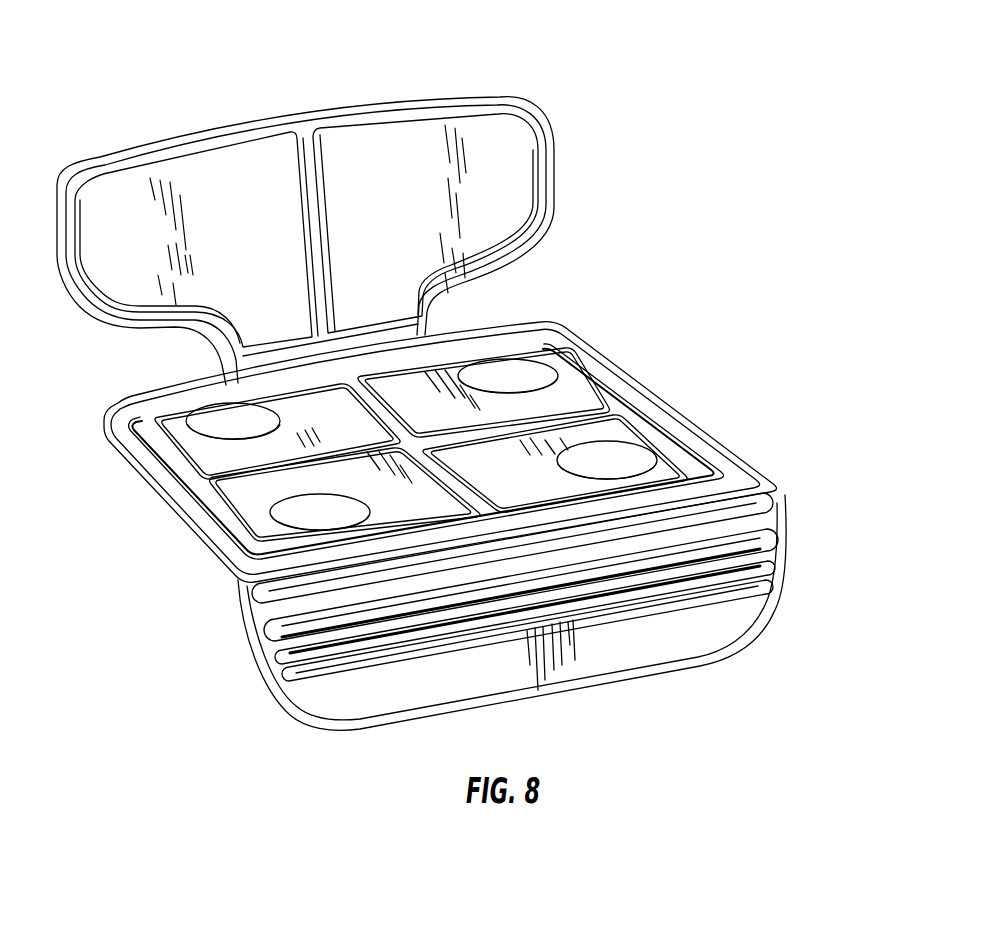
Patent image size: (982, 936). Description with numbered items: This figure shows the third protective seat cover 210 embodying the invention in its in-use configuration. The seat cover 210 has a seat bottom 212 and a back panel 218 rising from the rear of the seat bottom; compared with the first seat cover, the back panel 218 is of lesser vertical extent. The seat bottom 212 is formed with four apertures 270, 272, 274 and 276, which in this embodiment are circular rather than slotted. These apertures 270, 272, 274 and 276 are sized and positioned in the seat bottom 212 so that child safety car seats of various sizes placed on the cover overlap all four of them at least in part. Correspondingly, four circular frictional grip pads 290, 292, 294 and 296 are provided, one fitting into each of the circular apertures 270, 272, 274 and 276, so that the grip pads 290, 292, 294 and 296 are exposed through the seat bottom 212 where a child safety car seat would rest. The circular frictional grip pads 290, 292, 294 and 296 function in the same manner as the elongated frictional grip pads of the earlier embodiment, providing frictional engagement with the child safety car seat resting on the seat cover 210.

The seat cover 210 is at (593, 119).
The seat bottom 212 is at (243, 492).
The back panel 218 is at (513, 187).
The aperture 270 is at (662, 460).
The aperture 272 is at (560, 355).
The aperture 274 is at (210, 441).
The aperture 276 is at (275, 523).
The circular frictional grip pad 290 is at (627, 453).
The circular frictional grip pad 292 is at (520, 375).
The circular frictional grip pad 294 is at (215, 423).
The circular frictional grip pad 296 is at (308, 515).